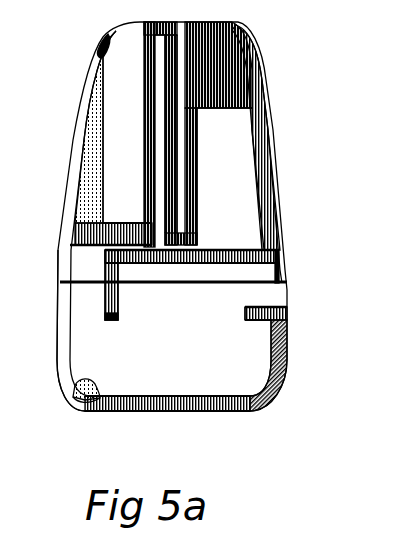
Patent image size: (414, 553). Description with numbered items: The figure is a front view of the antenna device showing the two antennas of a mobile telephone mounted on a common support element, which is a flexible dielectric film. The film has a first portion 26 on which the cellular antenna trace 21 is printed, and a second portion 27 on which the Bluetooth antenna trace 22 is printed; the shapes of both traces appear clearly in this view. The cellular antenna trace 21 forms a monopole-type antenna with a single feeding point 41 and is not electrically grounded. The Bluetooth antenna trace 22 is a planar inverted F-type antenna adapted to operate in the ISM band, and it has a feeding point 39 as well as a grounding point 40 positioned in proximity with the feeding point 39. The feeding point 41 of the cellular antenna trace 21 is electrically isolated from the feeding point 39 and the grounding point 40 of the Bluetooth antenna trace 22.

The cellular antenna trace 21 is at (100, 50).
The Bluetooth antenna trace 22 is at (75, 400).
The first portion of the flexible dielectric film 26 is at (60, 258).
The second portion of the flexible dielectric film 27 is at (72, 352).
The feeding point 39 is at (287, 291).
The grounding point 40 is at (247, 317).
The feeding point 41 is at (100, 313).